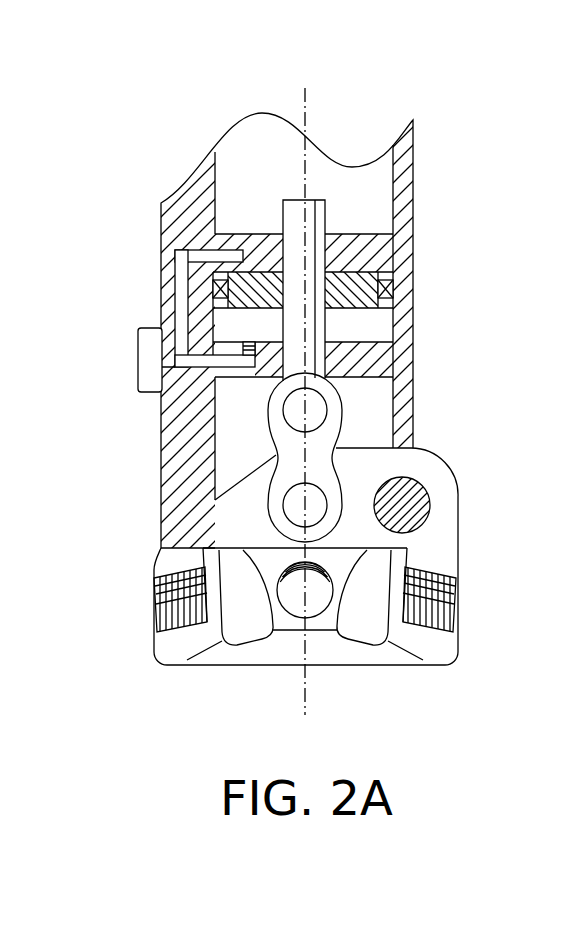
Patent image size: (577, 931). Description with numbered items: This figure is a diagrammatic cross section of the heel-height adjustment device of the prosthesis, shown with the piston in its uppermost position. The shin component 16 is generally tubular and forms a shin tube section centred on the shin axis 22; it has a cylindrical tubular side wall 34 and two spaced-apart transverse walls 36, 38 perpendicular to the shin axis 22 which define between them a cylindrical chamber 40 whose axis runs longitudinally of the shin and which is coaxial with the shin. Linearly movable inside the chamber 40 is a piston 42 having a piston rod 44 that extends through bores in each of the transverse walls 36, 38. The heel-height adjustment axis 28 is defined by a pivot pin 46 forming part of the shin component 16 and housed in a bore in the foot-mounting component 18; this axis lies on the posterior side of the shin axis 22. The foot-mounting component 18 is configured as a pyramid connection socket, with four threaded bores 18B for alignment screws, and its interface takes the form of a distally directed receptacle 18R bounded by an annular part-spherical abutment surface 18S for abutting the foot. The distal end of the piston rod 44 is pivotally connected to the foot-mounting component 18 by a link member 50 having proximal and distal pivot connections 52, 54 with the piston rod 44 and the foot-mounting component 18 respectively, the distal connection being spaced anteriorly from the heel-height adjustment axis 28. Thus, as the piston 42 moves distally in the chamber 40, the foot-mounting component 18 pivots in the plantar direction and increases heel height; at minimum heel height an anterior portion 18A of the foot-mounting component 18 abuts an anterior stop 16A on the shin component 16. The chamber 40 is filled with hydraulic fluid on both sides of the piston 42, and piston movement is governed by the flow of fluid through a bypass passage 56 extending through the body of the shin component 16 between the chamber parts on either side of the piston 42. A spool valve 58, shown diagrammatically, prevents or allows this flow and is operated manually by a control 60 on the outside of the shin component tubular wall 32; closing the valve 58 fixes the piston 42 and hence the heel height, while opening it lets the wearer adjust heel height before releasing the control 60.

The shin component 16 is at (100, 297).
The anterior stop 16A is at (165, 518).
The foot-mounting component 18 is at (460, 502).
The anterior portion 18A is at (163, 565).
The threaded bores 18B is at (177, 610).
The distally directed receptacle 18R is at (336, 680).
The abutment surface 18S is at (402, 640).
The shin axis 22 is at (310, 106).
The heel-height adjustment axis 28 is at (402, 503).
The shin component tubular wall 32 is at (184, 200).
The cylindrical tubular side wall 34 is at (383, 307).
The transverse wall 36 is at (383, 252).
The transverse wall 38 is at (383, 360).
The cylindrical chamber 40 is at (383, 330).
The piston 42 is at (384, 288).
The piston rod 44 is at (310, 222).
The pivot pin 46 is at (430, 513).
The link member 50 is at (333, 450).
The proximal pivot connection 52 is at (292, 412).
The distal pivot connection 54 is at (292, 507).
The bypass passage 56 is at (184, 261).
The spool valve 58 is at (170, 368).
The control 60 is at (147, 367).